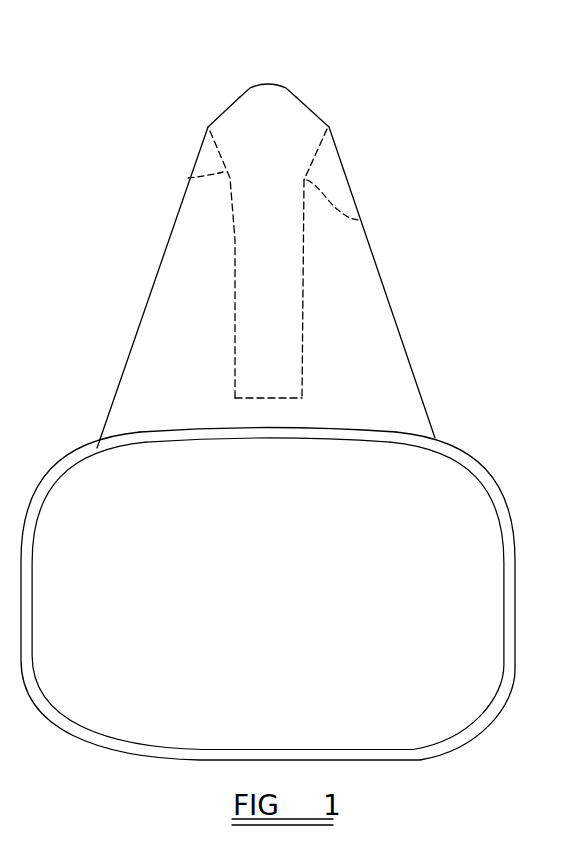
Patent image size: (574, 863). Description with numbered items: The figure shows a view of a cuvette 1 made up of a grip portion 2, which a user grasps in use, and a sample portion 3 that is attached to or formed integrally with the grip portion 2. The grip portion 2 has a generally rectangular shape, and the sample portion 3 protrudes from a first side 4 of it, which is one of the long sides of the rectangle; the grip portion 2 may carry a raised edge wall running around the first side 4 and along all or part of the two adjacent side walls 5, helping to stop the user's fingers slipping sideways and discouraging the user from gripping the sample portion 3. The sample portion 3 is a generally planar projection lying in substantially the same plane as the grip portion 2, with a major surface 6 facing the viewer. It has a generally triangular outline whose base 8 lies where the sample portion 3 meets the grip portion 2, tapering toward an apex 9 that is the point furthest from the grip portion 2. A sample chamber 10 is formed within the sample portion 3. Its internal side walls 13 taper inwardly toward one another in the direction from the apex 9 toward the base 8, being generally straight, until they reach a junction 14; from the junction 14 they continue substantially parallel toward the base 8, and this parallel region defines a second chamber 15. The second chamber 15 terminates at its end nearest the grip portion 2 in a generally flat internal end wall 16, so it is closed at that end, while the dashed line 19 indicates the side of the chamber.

The cuvette 1 is at (392, 183).
The grip portion 2 is at (268, 537).
The sample portion 3 is at (152, 207).
The first side 4 is at (379, 444).
The adjacent side walls 5 is at (34, 545).
The major surface 6 is at (388, 373).
The base 8 is at (193, 427).
The apex 9 is at (268, 84).
The sample chamber 10 is at (295, 133).
The internal side walls 13 is at (188, 178).
The junction 14 is at (217, 222).
The second chamber 15 is at (357, 273).
The internal end wall 16 is at (277, 399).
The pocket side edge 19 is at (280, 340).